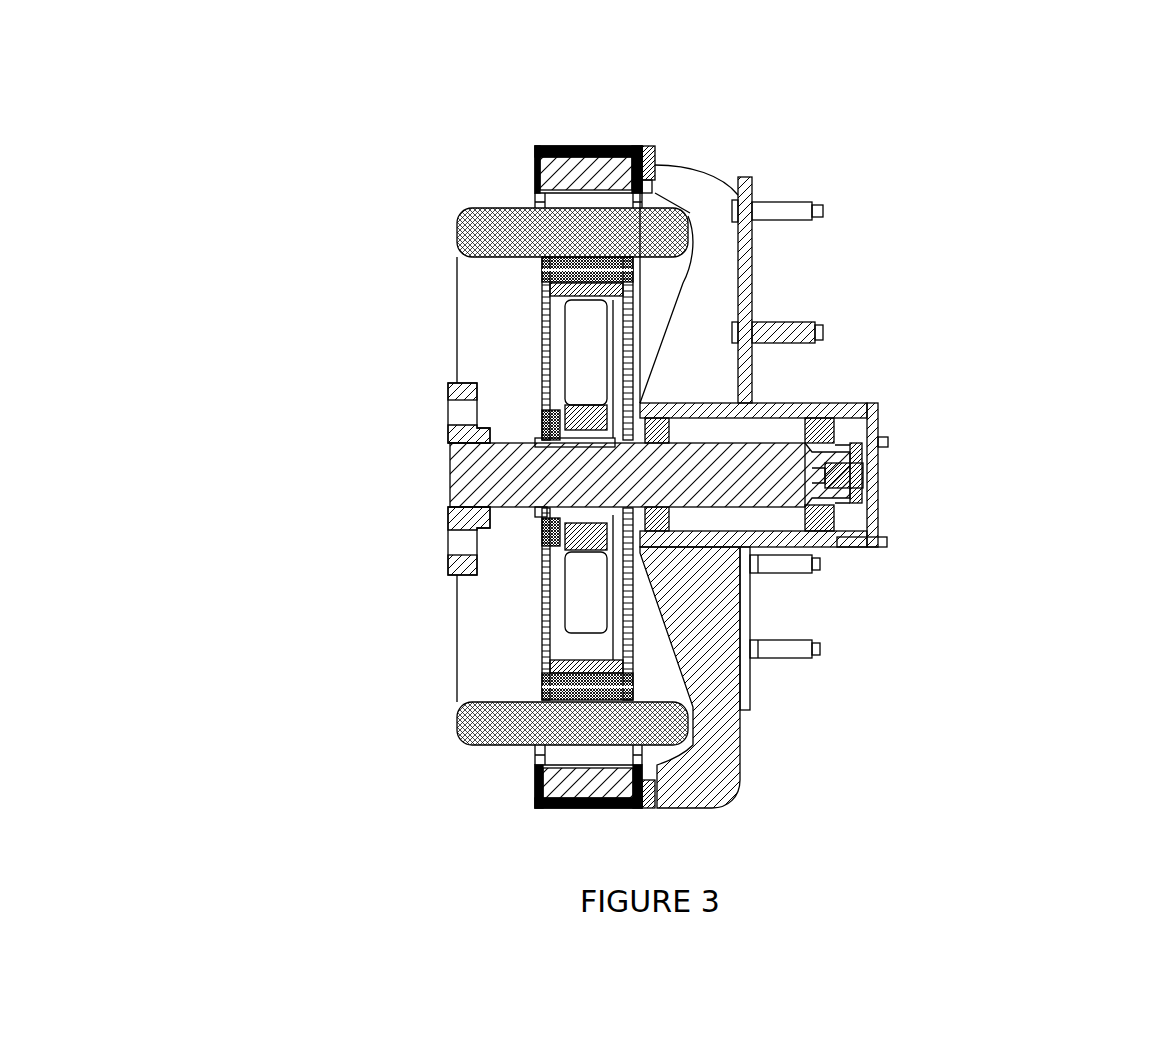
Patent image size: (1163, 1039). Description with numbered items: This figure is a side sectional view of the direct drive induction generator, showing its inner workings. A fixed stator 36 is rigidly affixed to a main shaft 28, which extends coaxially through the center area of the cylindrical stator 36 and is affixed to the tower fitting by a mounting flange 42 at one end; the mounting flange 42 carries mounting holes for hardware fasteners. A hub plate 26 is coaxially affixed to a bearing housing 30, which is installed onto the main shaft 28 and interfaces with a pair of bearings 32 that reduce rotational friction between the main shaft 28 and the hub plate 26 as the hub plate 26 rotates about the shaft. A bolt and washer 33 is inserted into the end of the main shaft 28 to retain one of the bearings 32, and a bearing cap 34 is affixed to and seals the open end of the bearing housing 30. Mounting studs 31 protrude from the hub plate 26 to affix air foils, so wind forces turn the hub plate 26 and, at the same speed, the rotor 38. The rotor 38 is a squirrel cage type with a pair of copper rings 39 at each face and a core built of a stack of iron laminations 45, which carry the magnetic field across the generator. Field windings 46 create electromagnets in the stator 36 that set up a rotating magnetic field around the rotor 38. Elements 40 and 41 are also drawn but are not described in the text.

The hub plate 26 is at (752, 182).
The main shaft 28 is at (748, 445).
The bearing housing 30 is at (830, 547).
The mounting studs 31 is at (822, 205).
The bearings 32 is at (835, 418).
The bolt and washer 33 is at (865, 476).
The bearing cap 34 is at (880, 413).
The stator 36 is at (460, 725).
The rotor 38 is at (601, 165).
The copper rings 39 is at (537, 182).
The coil bobbin 40 is at (565, 563).
The coil winding 41 is at (635, 684).
The mounting flange 42 is at (448, 432).
The iron laminations 45 is at (620, 165).
The field windings 46 is at (470, 240).